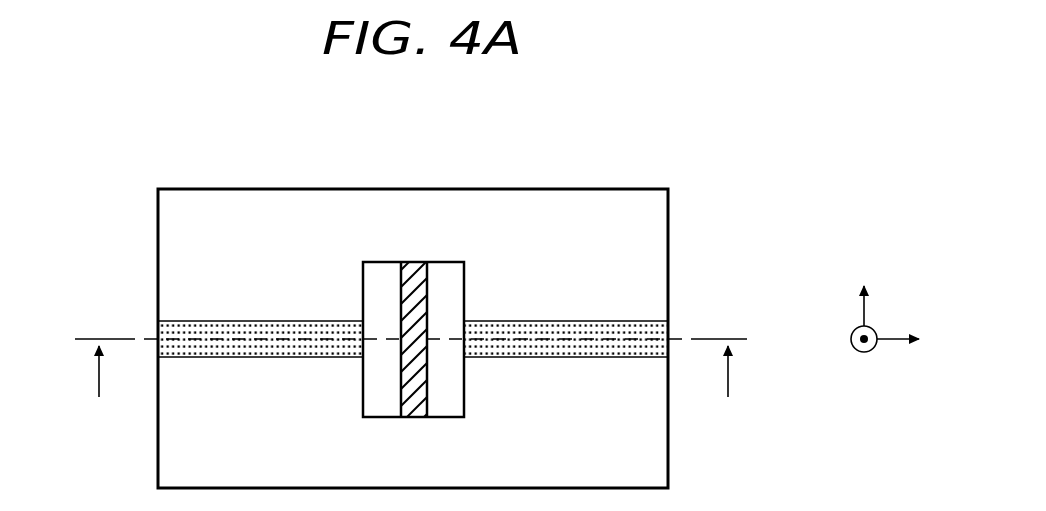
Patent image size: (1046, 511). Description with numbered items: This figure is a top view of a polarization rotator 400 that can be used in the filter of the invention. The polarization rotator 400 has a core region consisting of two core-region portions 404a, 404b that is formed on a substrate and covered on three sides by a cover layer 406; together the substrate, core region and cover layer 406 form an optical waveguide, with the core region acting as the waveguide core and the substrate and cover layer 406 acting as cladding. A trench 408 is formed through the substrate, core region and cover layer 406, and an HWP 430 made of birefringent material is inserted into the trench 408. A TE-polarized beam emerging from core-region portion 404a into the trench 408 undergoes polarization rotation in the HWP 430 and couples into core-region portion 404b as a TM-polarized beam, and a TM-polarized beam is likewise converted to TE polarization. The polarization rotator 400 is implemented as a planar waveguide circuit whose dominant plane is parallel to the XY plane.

The polarization rotator 400 is at (442, 116).
The core-region portion 404a is at (158, 328).
The core-region portion 404b is at (669, 328).
The cover layer 406 is at (645, 471).
The trench 408 is at (450, 294).
The HWP 430 is at (418, 260).